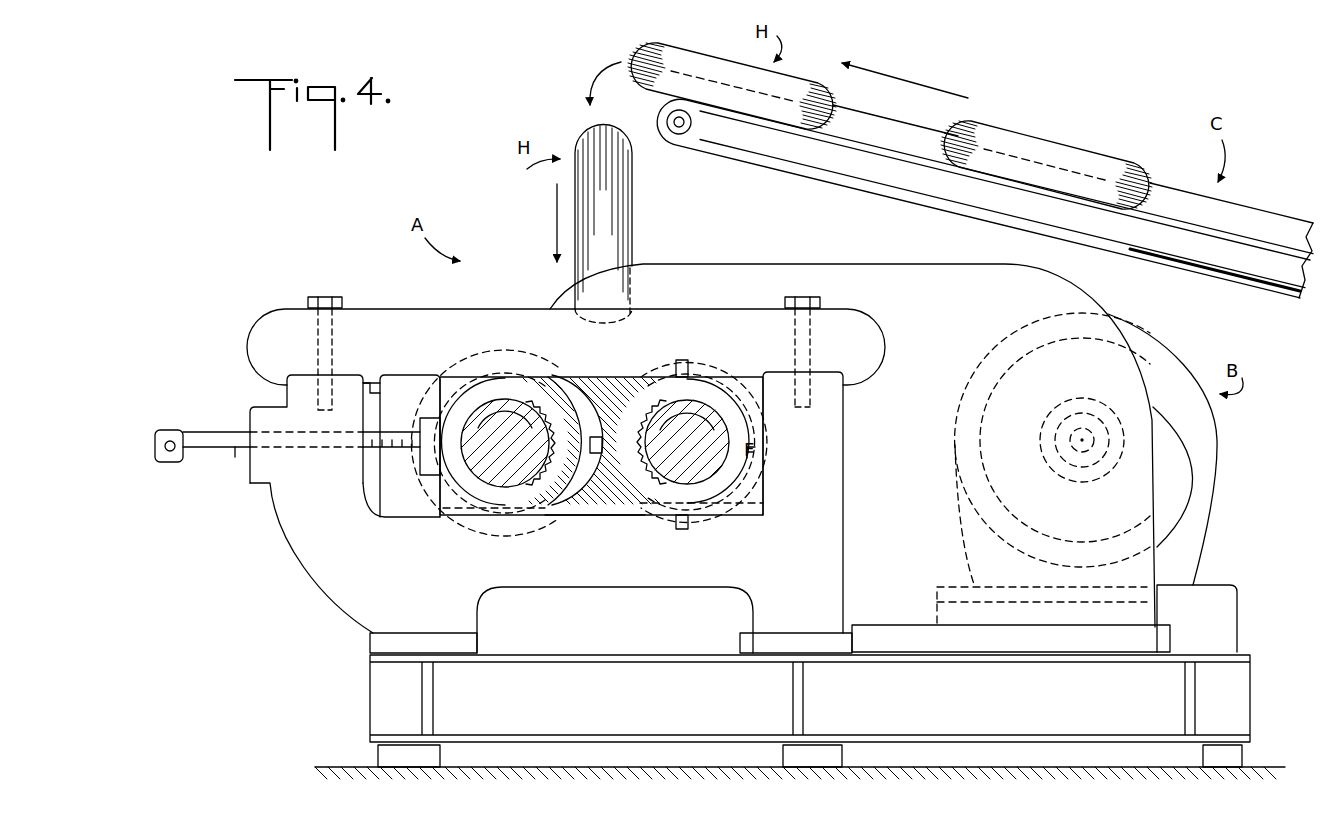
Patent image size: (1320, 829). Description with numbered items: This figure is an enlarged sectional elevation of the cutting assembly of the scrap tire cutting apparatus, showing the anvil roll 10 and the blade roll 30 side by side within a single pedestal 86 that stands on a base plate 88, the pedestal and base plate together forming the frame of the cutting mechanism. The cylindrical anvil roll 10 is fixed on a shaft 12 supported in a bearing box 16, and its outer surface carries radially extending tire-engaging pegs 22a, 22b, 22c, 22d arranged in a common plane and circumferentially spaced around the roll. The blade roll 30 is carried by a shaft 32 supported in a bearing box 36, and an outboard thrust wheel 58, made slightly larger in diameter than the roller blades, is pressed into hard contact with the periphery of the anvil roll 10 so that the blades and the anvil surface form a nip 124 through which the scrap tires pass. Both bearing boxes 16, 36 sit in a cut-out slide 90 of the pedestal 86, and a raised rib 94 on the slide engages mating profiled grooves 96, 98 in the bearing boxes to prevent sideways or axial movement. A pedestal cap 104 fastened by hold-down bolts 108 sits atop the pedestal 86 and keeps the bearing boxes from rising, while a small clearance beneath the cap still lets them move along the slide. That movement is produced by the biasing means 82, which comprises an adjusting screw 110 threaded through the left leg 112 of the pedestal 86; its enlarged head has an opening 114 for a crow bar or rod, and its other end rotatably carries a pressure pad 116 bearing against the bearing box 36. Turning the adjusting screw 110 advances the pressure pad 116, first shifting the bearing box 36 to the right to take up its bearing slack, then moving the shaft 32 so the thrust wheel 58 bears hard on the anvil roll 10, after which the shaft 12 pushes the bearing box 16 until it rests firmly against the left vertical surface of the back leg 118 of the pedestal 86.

The anvil roll 10 is at (612, 390).
The shaft 12 is at (707, 478).
The bearing box 16 is at (757, 415).
The peg 22a is at (768, 452).
The peg 22b is at (688, 362).
The peg 22c is at (609, 440).
The peg 22d is at (681, 528).
The blade roll 30 is at (412, 490).
The shaft 32 is at (495, 397).
The bearing box 36 is at (470, 513).
The thrust wheel 58 is at (433, 397).
The biasing means 82 is at (231, 468).
The pedestal 86 is at (320, 565).
The base plate 88 is at (383, 700).
The slide 90 is at (580, 513).
The raised rib 94 is at (615, 513).
The profiled groove 96 is at (777, 503).
The profiled groove 98 is at (452, 516).
The pedestal cap 104 is at (263, 337).
The hold-down bolt 108 is at (322, 296).
The adjusting screw 110 is at (218, 443).
The leg 112 is at (287, 478).
The opening 114 is at (168, 463).
The pressure pad 116 is at (420, 423).
The back leg 118 is at (843, 443).
The nip 124 is at (595, 393).